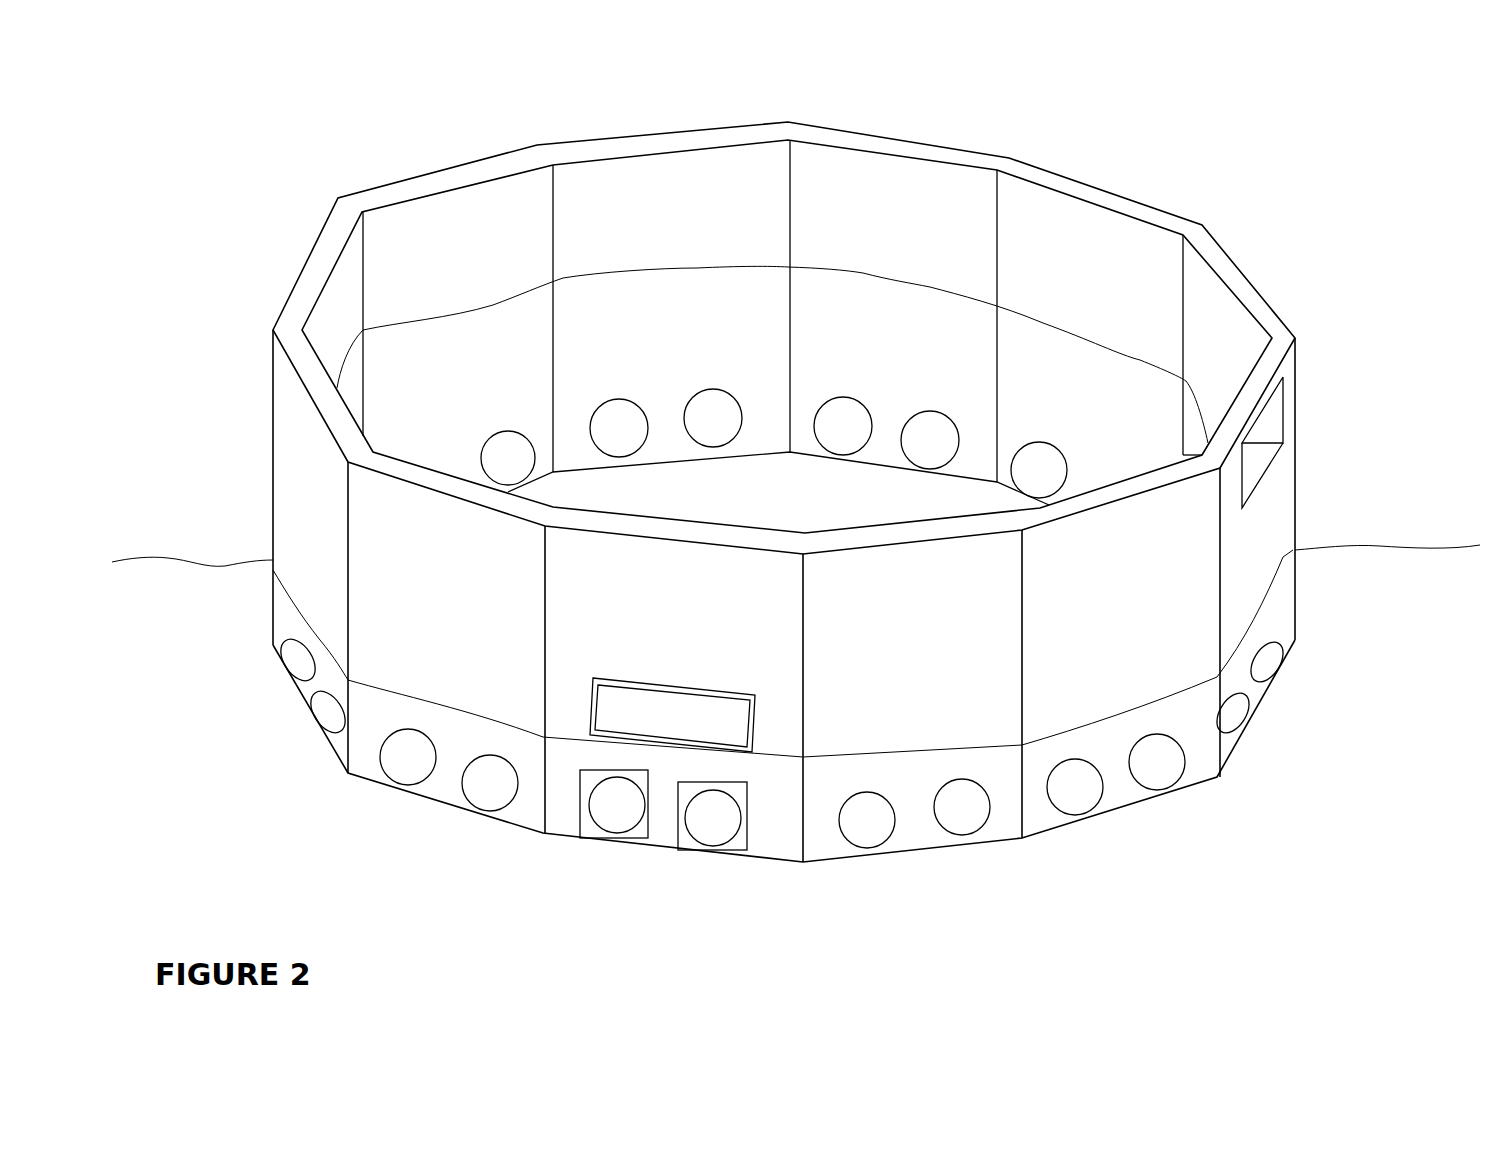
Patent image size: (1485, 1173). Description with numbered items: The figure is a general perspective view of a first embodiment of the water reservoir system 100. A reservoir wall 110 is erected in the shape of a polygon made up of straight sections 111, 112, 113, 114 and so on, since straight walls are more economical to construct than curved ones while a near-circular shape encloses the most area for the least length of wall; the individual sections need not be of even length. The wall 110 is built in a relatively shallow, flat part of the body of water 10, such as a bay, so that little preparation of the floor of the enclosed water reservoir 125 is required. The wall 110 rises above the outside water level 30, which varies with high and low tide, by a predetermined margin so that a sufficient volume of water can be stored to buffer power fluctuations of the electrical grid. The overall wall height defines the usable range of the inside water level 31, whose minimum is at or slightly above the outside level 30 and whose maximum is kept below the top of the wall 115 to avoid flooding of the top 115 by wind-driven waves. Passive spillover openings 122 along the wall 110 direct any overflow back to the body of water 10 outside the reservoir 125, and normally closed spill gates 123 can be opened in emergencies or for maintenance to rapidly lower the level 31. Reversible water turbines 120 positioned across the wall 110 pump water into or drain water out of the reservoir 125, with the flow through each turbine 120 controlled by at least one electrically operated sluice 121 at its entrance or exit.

The water reservoir system 100 is at (276, 146).
The top of the wall 115 is at (710, 128).
The reservoir wall 110 is at (295, 450).
The wall section 111 is at (421, 561).
The wall section 112 is at (643, 589).
The wall section 113 is at (889, 599).
The wall section 114 is at (1096, 556).
The body of water 10 is at (1177, 878).
The water reservoir 125 is at (764, 503).
The passive spillover opening 122 is at (1283, 409).
The spill gate 123 is at (588, 702).
The electrically operated sluice 121 is at (578, 820).
The reversible water turbine 120 is at (957, 783).
The water level inside the reservoir 31 is at (444, 339).
The water level outside the wall 30 is at (155, 588).